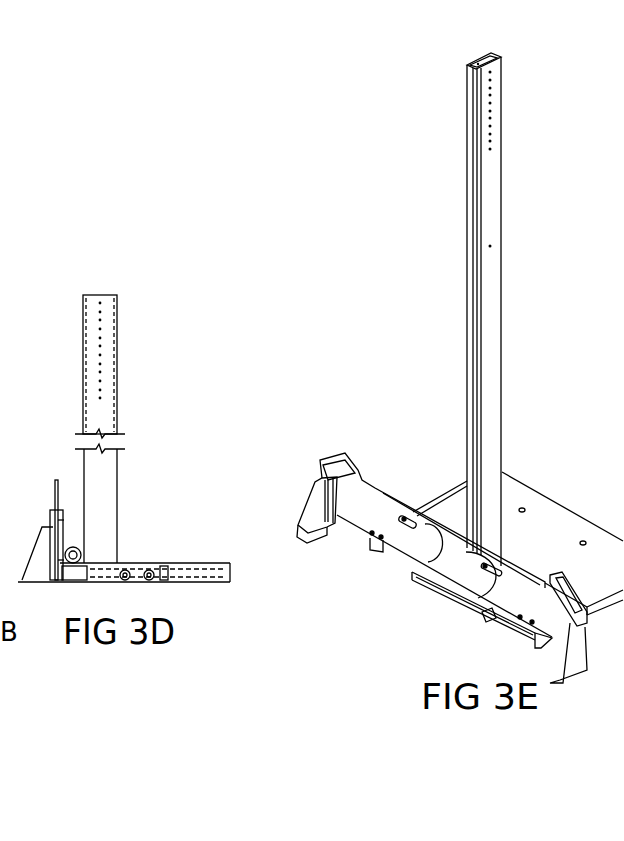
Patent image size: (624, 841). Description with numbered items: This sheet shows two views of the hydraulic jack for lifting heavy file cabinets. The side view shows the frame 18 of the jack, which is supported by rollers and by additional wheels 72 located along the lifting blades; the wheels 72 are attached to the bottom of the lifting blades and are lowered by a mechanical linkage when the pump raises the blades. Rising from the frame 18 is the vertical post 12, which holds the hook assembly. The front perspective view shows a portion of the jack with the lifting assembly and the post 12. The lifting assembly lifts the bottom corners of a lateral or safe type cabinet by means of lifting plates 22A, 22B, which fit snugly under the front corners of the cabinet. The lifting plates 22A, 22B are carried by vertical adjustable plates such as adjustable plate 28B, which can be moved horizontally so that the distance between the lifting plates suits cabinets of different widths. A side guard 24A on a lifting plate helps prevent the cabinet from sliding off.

In FIG. 3D, the vertical post 12 is at (112, 415).
In FIG. 3E, the vertical post 12 is at (501, 335).
In FIG. 3D, the frame 18 is at (212, 582).
In FIG. 3D, the wheels 72 is at (150, 583).
In FIG. 3E, the lifting plate 22A is at (315, 535).
In FIG. 3E, the lifting plate 22B is at (557, 673).
In FIG. 3E, the side guard 24A is at (395, 537).
In FIG. 3E, the adjustable plate 28B is at (502, 598).